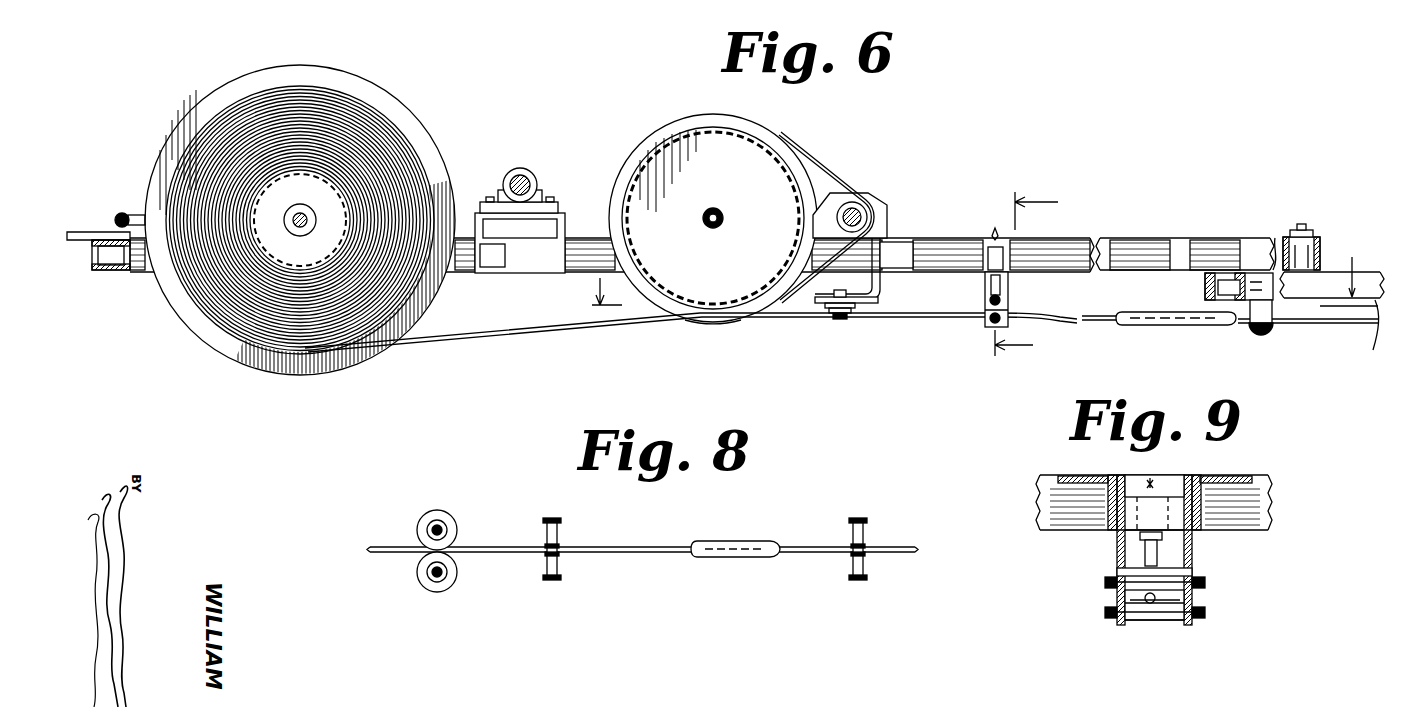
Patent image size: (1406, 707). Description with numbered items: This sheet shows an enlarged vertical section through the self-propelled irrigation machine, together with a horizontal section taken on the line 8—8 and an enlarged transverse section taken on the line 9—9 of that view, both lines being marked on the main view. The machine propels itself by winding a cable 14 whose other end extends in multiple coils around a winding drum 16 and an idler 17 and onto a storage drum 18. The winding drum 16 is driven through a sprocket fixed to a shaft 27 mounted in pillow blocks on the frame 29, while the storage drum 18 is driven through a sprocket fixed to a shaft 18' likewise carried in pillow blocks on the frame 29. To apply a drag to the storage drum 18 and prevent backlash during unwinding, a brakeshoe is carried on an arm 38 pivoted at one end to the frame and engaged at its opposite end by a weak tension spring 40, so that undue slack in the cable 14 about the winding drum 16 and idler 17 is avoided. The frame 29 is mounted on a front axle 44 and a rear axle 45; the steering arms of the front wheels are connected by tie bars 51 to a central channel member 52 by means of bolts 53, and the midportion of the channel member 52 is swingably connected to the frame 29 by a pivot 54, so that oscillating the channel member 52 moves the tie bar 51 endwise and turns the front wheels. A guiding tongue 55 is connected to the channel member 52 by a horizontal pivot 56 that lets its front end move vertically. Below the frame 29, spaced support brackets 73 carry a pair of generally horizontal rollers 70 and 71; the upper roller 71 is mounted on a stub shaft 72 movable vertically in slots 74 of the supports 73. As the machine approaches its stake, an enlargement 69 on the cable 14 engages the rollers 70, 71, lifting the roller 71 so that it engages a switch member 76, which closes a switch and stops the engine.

In FIG. 6, the cable 14 is at (320, 348).
In FIG. 8, the cable 14 is at (608, 554).
In FIG. 9, the cable 14 is at (1149, 604).
In FIG. 6, the winding drum 16 is at (678, 152).
In FIG. 6, the idler 17 is at (867, 222).
In FIG. 6, the storage drum 18 is at (300, 209).
In FIG. 6, the shaft 18' is at (300, 203).
In FIG. 6, the shaft 27 is at (716, 210).
In FIG. 6, the frame 29 is at (528, 264).
In FIG. 9, the frame 29 is at (1200, 500).
In FIG. 6, the arm 38 is at (134, 215).
In FIG. 6, the weak tension spring 40 is at (118, 217).
In FIG. 6, the front axle 44 is at (1278, 241).
In FIG. 6, the rear axle 45 is at (105, 272).
In FIG. 6, the tie bar 51 is at (1220, 280).
In FIG. 6, the central channel member 52 is at (1274, 324).
In FIG. 6, the bolt 53 is at (1212, 302).
In FIG. 6, the pivot 54 is at (1302, 226).
In FIG. 6, the guiding tongue 55 is at (1370, 335).
In FIG. 6, the horizontal pivot 56 is at (1336, 286).
In FIG. 6, the enlargement 69 is at (1144, 324).
In FIG. 8, the enlargement 69 is at (724, 556).
In FIG. 6, the roller 70 is at (990, 316).
In FIG. 8, the roller 70 is at (545, 561).
In FIG. 9, the roller 70 is at (1168, 620).
In FIG. 6, the roller 71 is at (992, 300).
In FIG. 9, the roller 71 is at (1117, 592).
In FIG. 9, the stub shaft 72 is at (1204, 582).
In FIG. 6, the support bracket 73 is at (1008, 276).
In FIG. 8, the support bracket 73 is at (547, 526).
In FIG. 9, the support bracket 73 is at (1116, 544).
In FIG. 9, the slot 74 is at (1192, 570).
In FIG. 6, the switch member 76 is at (1009, 290).
In FIG. 9, the switch member 76 is at (1160, 556).
In FIG. 6, the section line 8 is at (970, 276).
In FIG. 6, the section line 9 is at (1027, 275).